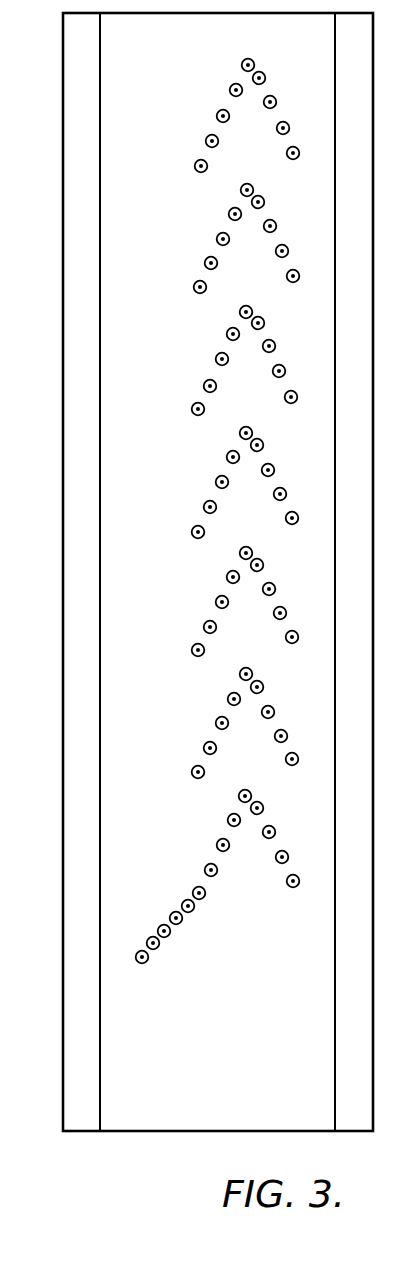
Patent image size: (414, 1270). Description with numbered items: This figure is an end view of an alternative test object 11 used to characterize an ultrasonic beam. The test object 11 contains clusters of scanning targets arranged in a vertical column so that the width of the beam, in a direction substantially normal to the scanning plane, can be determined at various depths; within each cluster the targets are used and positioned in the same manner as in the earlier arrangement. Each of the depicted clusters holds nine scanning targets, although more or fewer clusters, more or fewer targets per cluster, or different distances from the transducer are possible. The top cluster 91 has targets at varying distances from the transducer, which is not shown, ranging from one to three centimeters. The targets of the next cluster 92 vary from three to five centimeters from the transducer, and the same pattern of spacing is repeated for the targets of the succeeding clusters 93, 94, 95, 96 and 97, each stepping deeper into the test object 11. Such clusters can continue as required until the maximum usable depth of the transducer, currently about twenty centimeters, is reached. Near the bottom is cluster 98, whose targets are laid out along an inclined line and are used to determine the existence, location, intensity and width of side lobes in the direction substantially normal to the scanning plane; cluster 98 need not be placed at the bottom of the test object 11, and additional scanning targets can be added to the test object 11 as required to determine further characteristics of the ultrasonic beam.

The test object 11 is at (63, 267).
The top cluster 91 is at (148, 57).
The cluster 92 is at (148, 181).
The cluster 93 is at (148, 305).
The cluster 94 is at (148, 423).
The cluster 95 is at (148, 543).
The cluster 96 is at (148, 664).
The cluster 97 is at (148, 790).
The cluster 98 is at (208, 900).